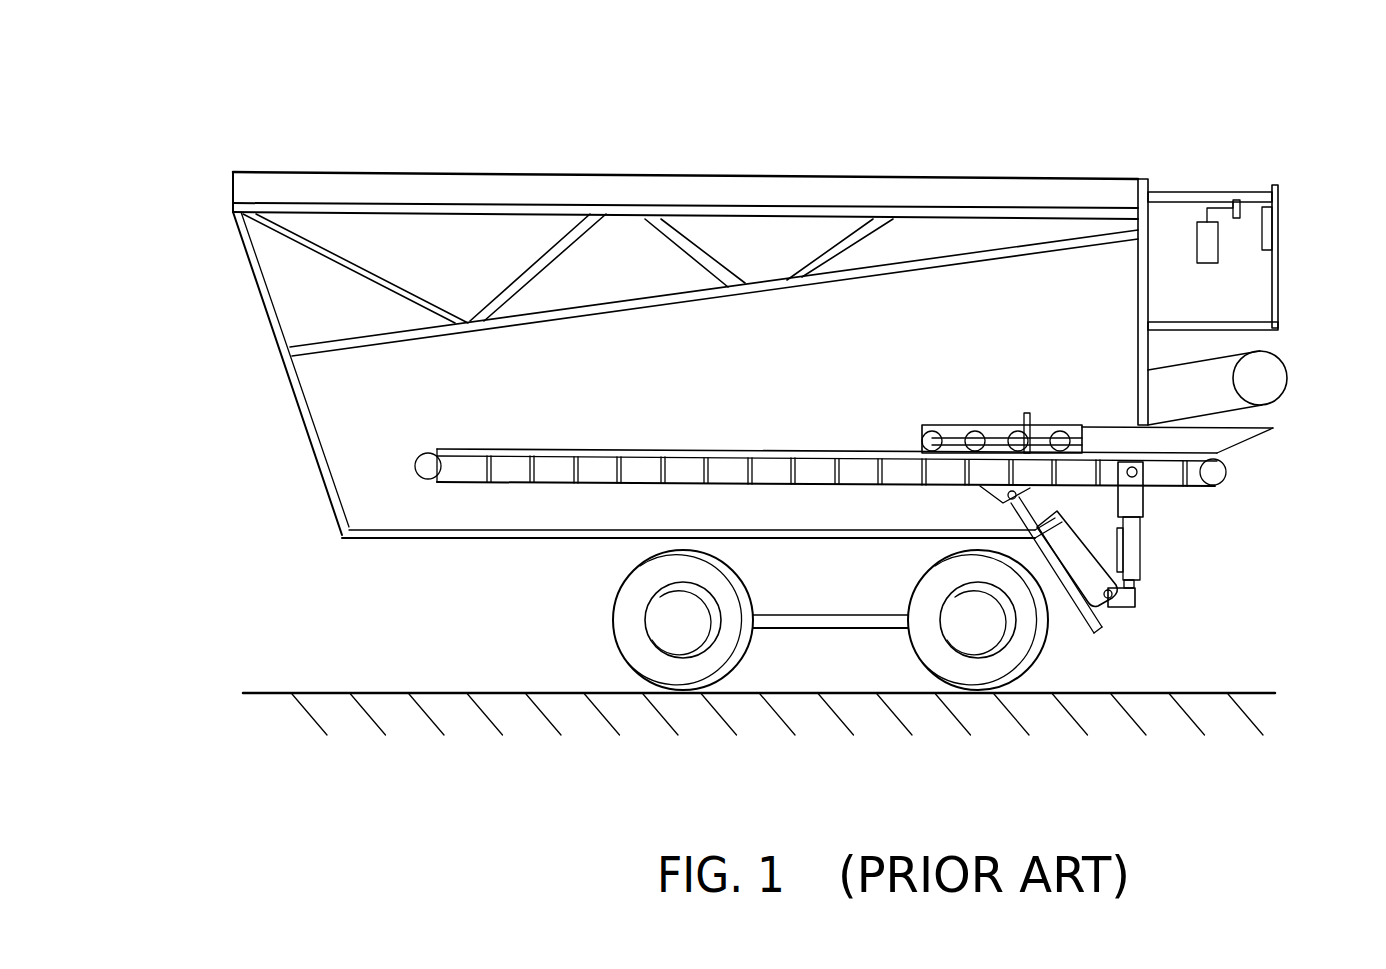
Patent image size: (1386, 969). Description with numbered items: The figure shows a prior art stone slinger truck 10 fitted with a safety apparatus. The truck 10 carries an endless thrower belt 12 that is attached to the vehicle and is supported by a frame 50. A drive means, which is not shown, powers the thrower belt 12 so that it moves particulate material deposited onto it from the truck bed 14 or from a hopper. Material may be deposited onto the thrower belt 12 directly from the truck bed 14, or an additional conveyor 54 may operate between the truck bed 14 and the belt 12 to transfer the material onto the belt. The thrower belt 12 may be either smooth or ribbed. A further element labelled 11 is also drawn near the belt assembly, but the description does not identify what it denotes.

The stone slinger truck 10 is at (810, 152).
The truck bed 14 is at (1032, 195).
The endless thrower belt 12 is at (641, 452).
The frame 50 is at (610, 462).
The roller assembly 11 is at (972, 412).
The additional conveyor 54 is at (1235, 353).